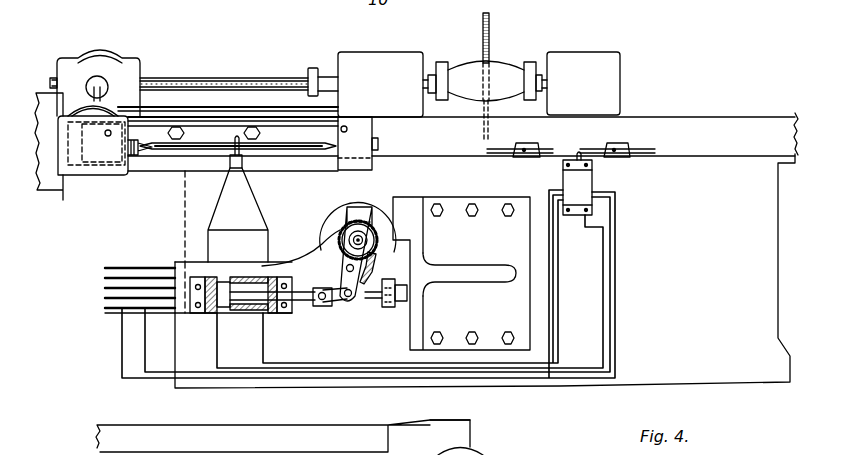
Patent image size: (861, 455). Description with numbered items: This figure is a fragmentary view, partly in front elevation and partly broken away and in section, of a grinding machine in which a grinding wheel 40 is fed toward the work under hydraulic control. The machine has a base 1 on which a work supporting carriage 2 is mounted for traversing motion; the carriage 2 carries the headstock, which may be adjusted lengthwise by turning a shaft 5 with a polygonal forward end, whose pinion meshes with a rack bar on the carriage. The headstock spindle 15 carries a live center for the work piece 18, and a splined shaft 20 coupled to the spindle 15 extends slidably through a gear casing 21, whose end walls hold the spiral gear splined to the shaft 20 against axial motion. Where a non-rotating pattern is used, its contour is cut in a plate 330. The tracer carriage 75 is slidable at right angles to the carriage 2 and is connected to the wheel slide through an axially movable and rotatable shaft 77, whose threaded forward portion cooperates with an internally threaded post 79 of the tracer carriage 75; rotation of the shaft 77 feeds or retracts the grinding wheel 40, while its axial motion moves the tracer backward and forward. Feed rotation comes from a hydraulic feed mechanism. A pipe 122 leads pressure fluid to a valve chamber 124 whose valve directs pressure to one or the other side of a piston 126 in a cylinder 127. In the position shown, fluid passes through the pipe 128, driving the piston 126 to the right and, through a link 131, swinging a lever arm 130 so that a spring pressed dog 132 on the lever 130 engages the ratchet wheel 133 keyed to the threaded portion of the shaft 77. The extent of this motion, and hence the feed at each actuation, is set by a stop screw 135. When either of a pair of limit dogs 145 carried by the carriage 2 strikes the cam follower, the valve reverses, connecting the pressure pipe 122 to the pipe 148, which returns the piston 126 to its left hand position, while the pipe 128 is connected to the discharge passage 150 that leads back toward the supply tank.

In FIG. 4, the base 1 is at (760, 262).
In FIG. 4, the work supporting carriage 2 is at (715, 115).
In FIG. 4, the shaft 5 is at (325, 77).
In FIG. 4, the spindle 15 is at (433, 66).
In FIG. 4, the work piece 18 is at (503, 72).
In FIG. 4, the splined shaft 20 is at (230, 78).
In FIG. 4, the gear casing 21 is at (132, 75).
In FIG. 4, the grinding wheel 40 is at (490, 30).
In FIG. 4, the tracer carriage 75 is at (327, 243).
In FIG. 4, the shaft 77 is at (367, 238).
In FIG. 4, the internally threaded post 79 is at (377, 222).
In FIG. 5, the internally threaded post 79 is at (154, 454).
In FIG. 4, the pipe 122 is at (617, 264).
In FIG. 4, the valve chamber 124 is at (580, 190).
In FIG. 4, the piston 126 is at (222, 288).
In FIG. 4, the cylinder 127 is at (255, 278).
In FIG. 4, the pipe 128 is at (176, 378).
In FIG. 4, the lever arm 130 is at (346, 270).
In FIG. 4, the link 131 is at (328, 303).
In FIG. 4, the spring pressed dog 132 is at (373, 261).
In FIG. 4, the ratchet wheel 133 is at (341, 227).
In FIG. 4, the stop screw 135 is at (378, 308).
In FIG. 4, the limit dogs 145 is at (528, 151).
In FIG. 4, the pipe 148 is at (268, 350).
In FIG. 4, the discharge passage 150 is at (601, 301).
In FIG. 4, the plate 330 is at (188, 146).